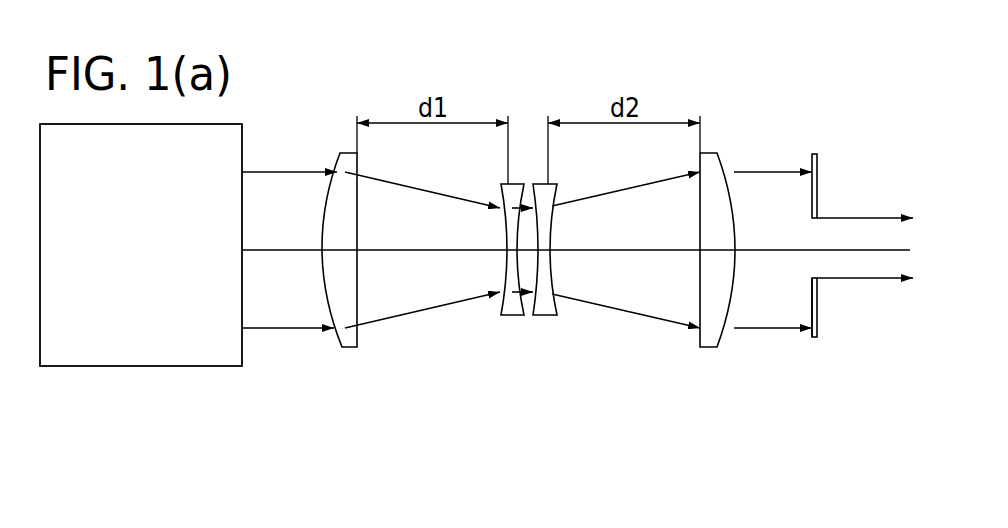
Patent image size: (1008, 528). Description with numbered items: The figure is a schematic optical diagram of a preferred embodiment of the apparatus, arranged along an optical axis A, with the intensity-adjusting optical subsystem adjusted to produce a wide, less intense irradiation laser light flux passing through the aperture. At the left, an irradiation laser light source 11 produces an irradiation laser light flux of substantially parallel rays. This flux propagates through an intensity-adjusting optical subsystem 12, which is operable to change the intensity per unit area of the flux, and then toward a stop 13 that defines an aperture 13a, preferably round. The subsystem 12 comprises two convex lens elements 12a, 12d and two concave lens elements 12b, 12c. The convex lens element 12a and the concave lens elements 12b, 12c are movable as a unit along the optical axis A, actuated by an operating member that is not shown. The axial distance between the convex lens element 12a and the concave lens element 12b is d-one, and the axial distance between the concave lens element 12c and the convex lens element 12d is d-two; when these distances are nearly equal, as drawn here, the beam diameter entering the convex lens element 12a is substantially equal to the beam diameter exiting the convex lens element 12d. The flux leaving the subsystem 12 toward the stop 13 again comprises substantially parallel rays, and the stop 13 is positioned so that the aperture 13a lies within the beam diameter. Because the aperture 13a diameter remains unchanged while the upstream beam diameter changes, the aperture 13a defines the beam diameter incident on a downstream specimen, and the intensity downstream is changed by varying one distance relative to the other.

The irradiation laser light source 11 is at (160, 366).
The intensity-adjusting optical subsystem 12 is at (313, 427).
The convex lens element 12a is at (348, 347).
The concave lens element 12b is at (512, 315).
The concave lens element 12c is at (543, 315).
The convex lens element 12d is at (708, 347).
The stop 13 is at (818, 333).
The aperture 13a is at (820, 280).
The optical axis A is at (283, 250).